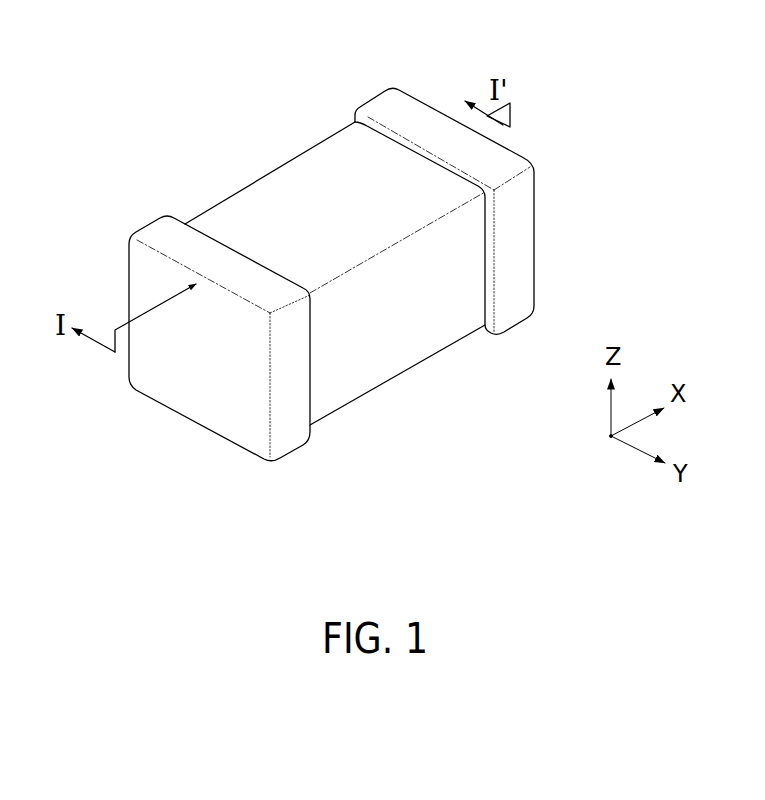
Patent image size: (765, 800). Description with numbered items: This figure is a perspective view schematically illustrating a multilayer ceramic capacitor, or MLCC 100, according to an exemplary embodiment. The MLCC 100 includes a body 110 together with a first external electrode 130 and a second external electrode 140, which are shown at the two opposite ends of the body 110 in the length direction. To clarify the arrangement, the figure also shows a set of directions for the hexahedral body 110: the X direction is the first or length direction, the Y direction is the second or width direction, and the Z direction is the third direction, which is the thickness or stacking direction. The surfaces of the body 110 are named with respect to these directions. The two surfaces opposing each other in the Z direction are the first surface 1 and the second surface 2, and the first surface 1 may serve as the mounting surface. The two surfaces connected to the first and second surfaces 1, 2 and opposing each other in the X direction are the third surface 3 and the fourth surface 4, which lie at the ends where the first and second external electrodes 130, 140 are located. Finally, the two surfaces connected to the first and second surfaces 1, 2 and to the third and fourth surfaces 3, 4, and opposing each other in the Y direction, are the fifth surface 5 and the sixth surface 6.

The multilayer ceramic capacitor 100 is at (167, 42).
The body 110 is at (287, 180).
The first external electrode 130 is at (157, 230).
The second external electrode 140 is at (378, 102).
The first surface 1 is at (393, 379).
The second surface 2 is at (340, 184).
The third surface 3 is at (199, 384).
The fourth surface 4 is at (433, 106).
The fifth surface 5 is at (406, 325).
The sixth surface 6 is at (224, 197).